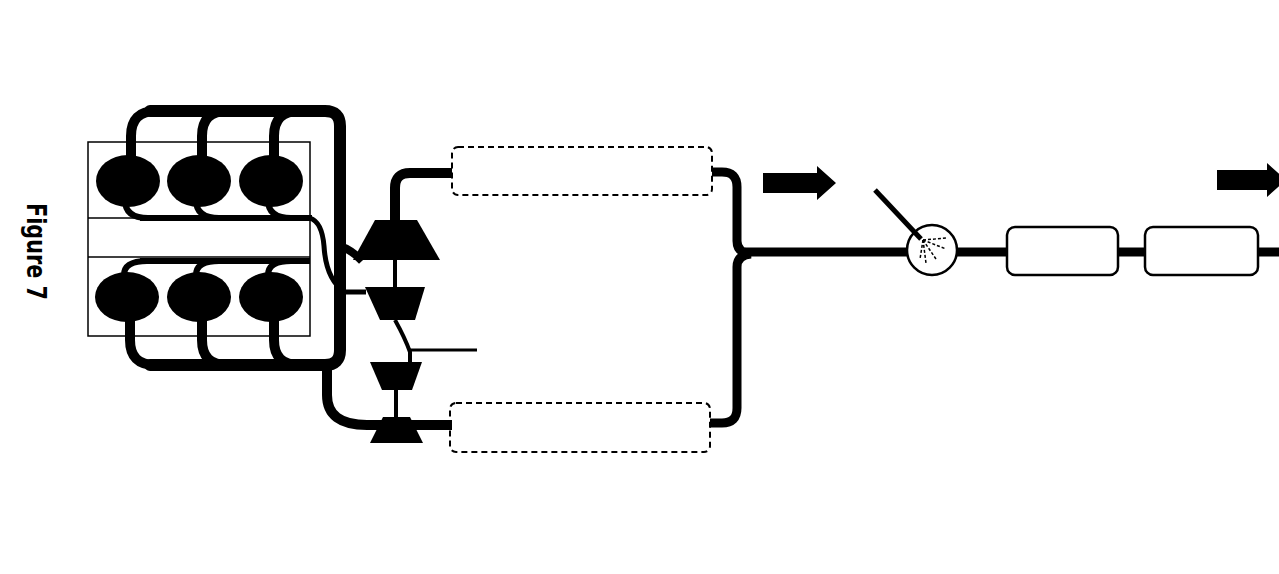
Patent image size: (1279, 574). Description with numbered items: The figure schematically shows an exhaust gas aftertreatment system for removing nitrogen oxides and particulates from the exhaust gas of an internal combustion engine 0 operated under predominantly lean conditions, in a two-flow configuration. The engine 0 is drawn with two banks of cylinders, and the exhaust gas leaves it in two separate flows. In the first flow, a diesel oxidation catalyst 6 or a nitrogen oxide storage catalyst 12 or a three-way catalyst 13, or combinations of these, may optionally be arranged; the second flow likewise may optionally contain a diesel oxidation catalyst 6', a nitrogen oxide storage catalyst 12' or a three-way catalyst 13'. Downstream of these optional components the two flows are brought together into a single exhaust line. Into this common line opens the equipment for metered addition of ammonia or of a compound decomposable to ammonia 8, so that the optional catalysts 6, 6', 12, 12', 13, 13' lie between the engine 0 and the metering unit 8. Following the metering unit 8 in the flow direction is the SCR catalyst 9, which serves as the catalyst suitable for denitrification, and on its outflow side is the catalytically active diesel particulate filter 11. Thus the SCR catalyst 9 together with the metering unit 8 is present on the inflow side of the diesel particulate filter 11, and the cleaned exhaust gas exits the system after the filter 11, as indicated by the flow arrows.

The internal combustion engine 0 is at (282, 277).
The diesel oxidation catalyst 6 is at (582, 171).
The nitrogen oxide storage catalyst 12 is at (582, 171).
The three-way catalyst 13 is at (582, 171).
The diesel oxidation catalyst 6' is at (580, 427).
The nitrogen oxide storage catalyst 12' is at (580, 427).
The three-way catalyst 13' is at (580, 427).
The equipment for metered addition of ammonia or of a compound decomposable to ammon 8 is at (875, 190).
The SCR catalyst 9 is at (1062, 251).
The diesel particulate filter 11 is at (1201, 251).